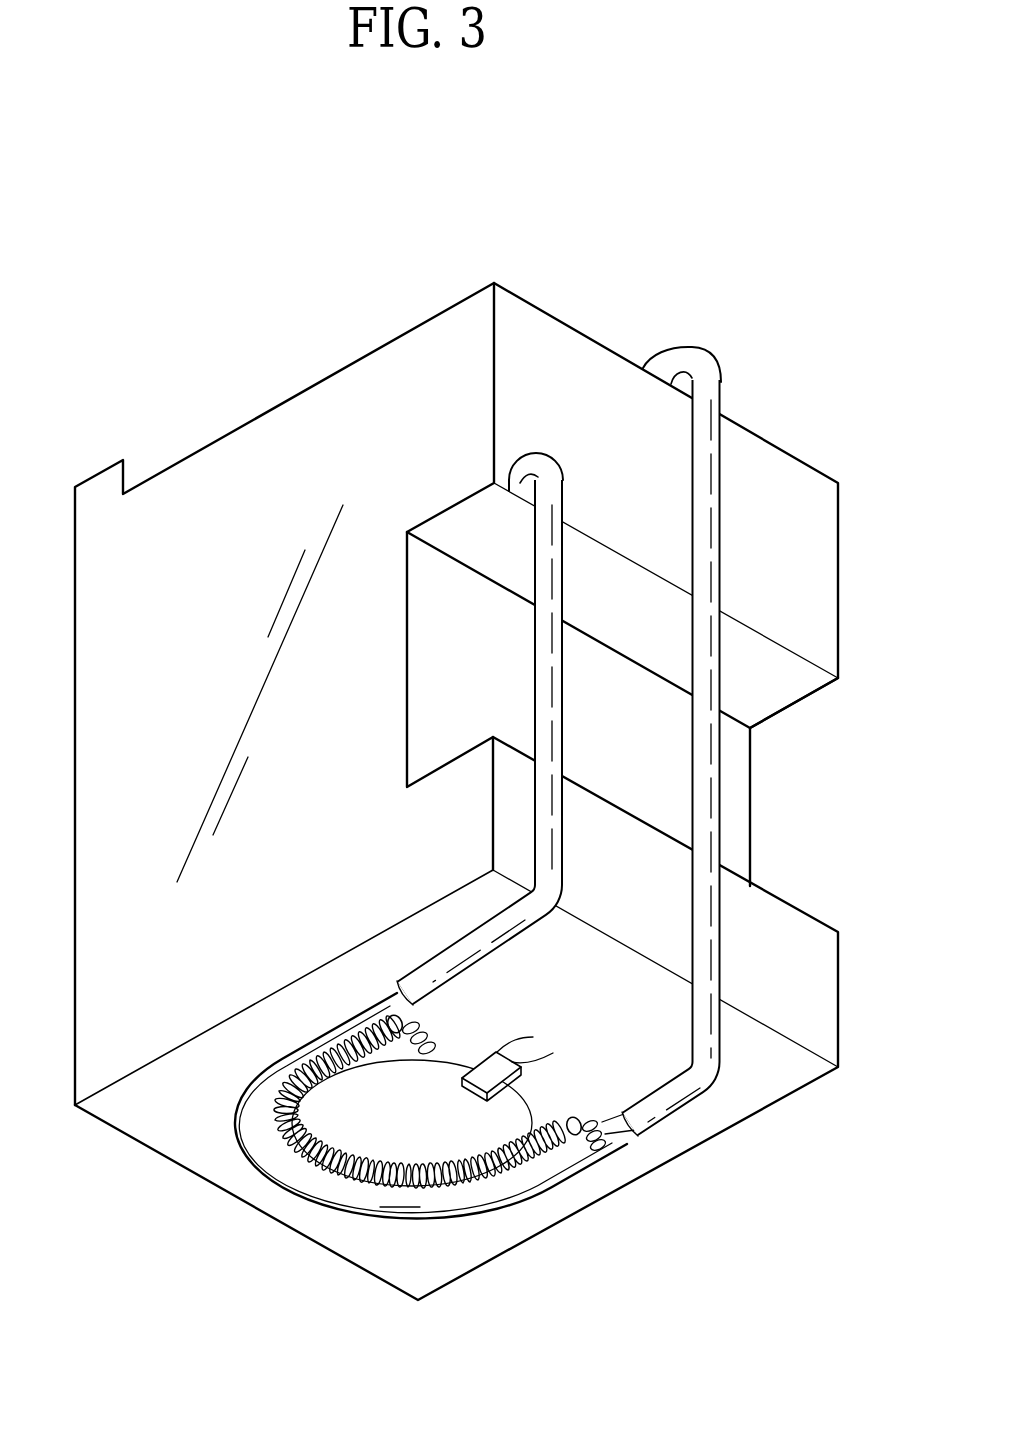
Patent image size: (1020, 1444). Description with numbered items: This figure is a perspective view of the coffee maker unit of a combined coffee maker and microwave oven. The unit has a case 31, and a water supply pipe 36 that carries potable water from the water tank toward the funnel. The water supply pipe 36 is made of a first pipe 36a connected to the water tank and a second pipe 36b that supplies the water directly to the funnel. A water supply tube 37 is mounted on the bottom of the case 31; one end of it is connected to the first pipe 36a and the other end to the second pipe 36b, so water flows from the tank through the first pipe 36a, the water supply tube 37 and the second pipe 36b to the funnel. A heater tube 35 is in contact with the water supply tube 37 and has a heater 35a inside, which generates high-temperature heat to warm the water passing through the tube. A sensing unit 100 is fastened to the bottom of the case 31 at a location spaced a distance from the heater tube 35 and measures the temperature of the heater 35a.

The case 31 is at (313, 412).
The heater tube 35 is at (517, 1185).
The heater 35a is at (457, 1192).
The water supply pipe 36 is at (863, 337).
The first pipe 36a is at (563, 480).
The second pipe 36b is at (722, 378).
The water supply tube 37 is at (328, 1190).
The sensing unit 100 is at (577, 1143).